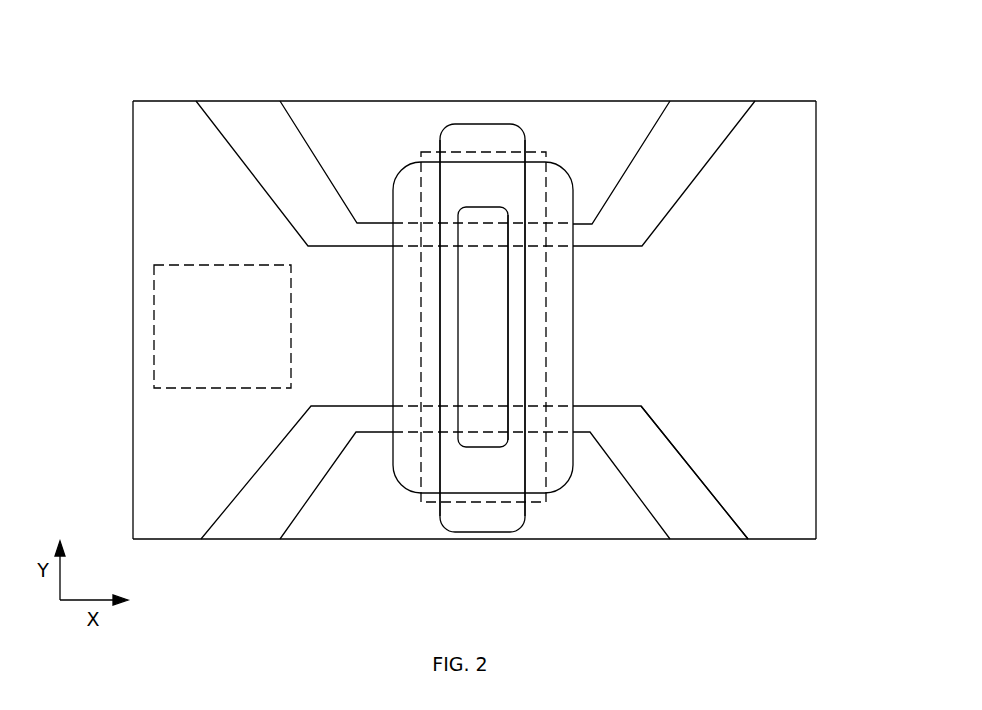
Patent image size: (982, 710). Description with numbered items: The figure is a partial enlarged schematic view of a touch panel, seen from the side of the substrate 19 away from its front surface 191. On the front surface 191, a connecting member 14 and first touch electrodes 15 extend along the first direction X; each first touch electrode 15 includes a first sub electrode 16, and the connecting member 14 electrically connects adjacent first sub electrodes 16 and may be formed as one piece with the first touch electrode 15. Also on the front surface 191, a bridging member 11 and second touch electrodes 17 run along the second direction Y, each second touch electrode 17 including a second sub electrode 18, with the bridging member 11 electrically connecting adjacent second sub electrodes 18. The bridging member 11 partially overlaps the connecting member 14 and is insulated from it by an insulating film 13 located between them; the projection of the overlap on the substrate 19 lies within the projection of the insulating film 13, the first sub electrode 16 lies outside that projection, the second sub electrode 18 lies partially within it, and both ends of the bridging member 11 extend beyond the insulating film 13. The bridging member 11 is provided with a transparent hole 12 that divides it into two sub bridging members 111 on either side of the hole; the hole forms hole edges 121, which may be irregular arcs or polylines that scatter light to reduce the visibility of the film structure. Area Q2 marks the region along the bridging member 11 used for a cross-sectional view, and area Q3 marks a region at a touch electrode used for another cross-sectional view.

The bridging member 11 is at (460, 145).
The sub bridging member 111 is at (518, 372).
The transparent hole 12 is at (488, 215).
The hole edge 121 is at (508, 300).
The insulating film 13 is at (563, 180).
The connecting member 14 is at (618, 255).
The first touch electrode 15 is at (772, 262).
The first sub electrode 16 is at (190, 248).
The second touch electrode 17 is at (375, 130).
The second sub electrode 18 is at (372, 490).
The substrate 19 is at (689, 550).
The front surface 191 is at (708, 522).
The area Q2 is at (421, 336).
The area Q3 is at (153, 303).